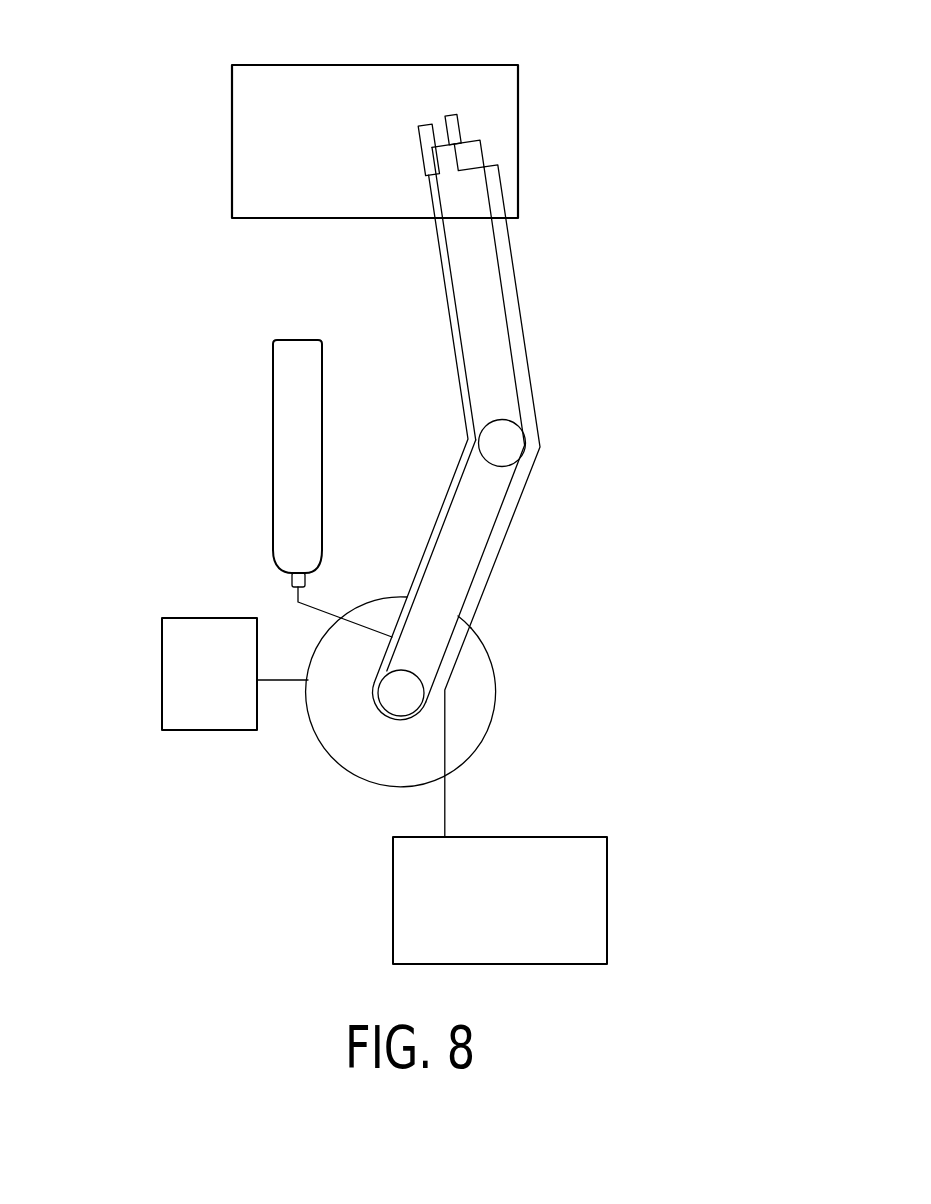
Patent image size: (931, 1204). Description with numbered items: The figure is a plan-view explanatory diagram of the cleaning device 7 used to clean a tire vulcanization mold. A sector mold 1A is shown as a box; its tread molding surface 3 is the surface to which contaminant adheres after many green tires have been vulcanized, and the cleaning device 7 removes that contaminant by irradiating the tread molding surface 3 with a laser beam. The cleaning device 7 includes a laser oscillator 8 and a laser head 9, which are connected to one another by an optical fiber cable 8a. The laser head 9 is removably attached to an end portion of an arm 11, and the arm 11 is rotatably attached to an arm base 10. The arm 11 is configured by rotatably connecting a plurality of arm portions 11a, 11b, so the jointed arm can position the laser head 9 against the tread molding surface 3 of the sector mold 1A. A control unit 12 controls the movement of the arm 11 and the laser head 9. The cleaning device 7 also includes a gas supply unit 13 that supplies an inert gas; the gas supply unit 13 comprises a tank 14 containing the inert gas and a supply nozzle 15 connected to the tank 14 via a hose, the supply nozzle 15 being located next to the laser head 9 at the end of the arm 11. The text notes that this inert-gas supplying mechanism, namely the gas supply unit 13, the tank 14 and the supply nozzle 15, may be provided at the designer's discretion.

The sector mold 1A is at (235, 107).
The tread molding surface 3 is at (263, 200).
The cleaning device 7 is at (562, 273).
The laser oscillator 8 is at (405, 893).
The optical fiber cable 8a is at (498, 562).
The laser head 9 is at (455, 128).
The arm base 10 is at (480, 705).
The arm 11 is at (556, 430).
The arm portion 11a is at (500, 333).
The arm portion 11b is at (500, 493).
The control unit 12 is at (205, 635).
The gas supply unit 13 is at (395, 243).
The tank 14 is at (392, 292).
The supply nozzle 15 is at (418, 174).